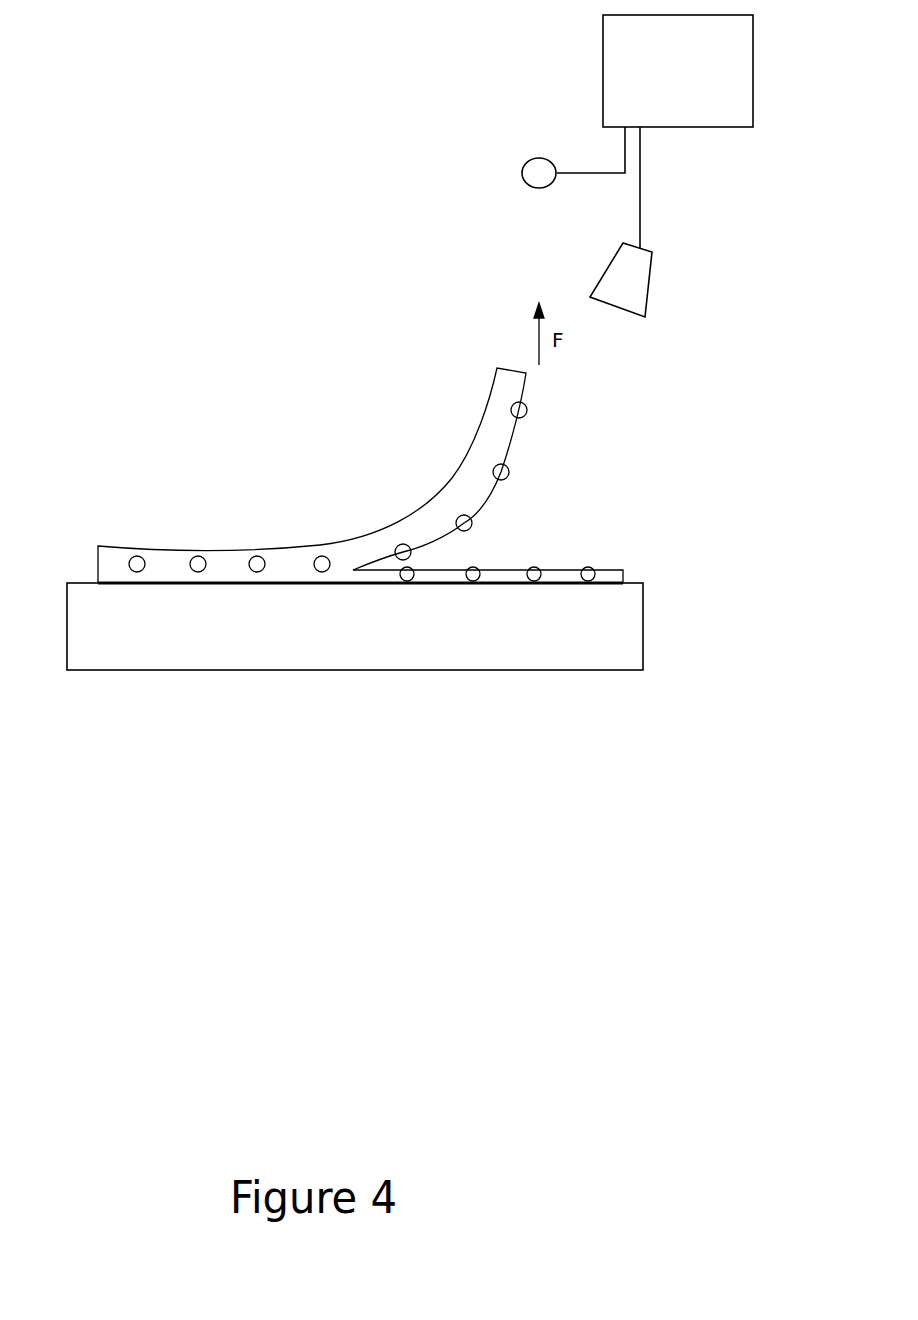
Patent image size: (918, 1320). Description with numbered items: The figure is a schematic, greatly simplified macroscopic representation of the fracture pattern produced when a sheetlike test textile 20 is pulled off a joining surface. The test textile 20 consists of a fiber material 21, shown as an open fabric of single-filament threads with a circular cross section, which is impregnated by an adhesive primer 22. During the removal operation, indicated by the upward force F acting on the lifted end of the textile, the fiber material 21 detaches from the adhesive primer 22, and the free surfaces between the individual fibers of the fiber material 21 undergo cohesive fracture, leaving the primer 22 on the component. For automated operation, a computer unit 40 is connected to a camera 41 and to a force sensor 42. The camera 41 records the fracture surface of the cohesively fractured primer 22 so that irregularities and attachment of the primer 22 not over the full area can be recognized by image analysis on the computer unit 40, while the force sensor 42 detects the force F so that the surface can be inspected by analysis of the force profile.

The sheetlike test textile 20 is at (170, 513).
The fiber material 21 is at (260, 557).
The adhesive primer 22 is at (628, 575).
The computer unit 40 is at (567, 48).
The camera 41 is at (587, 258).
The force sensor 42 is at (503, 178).